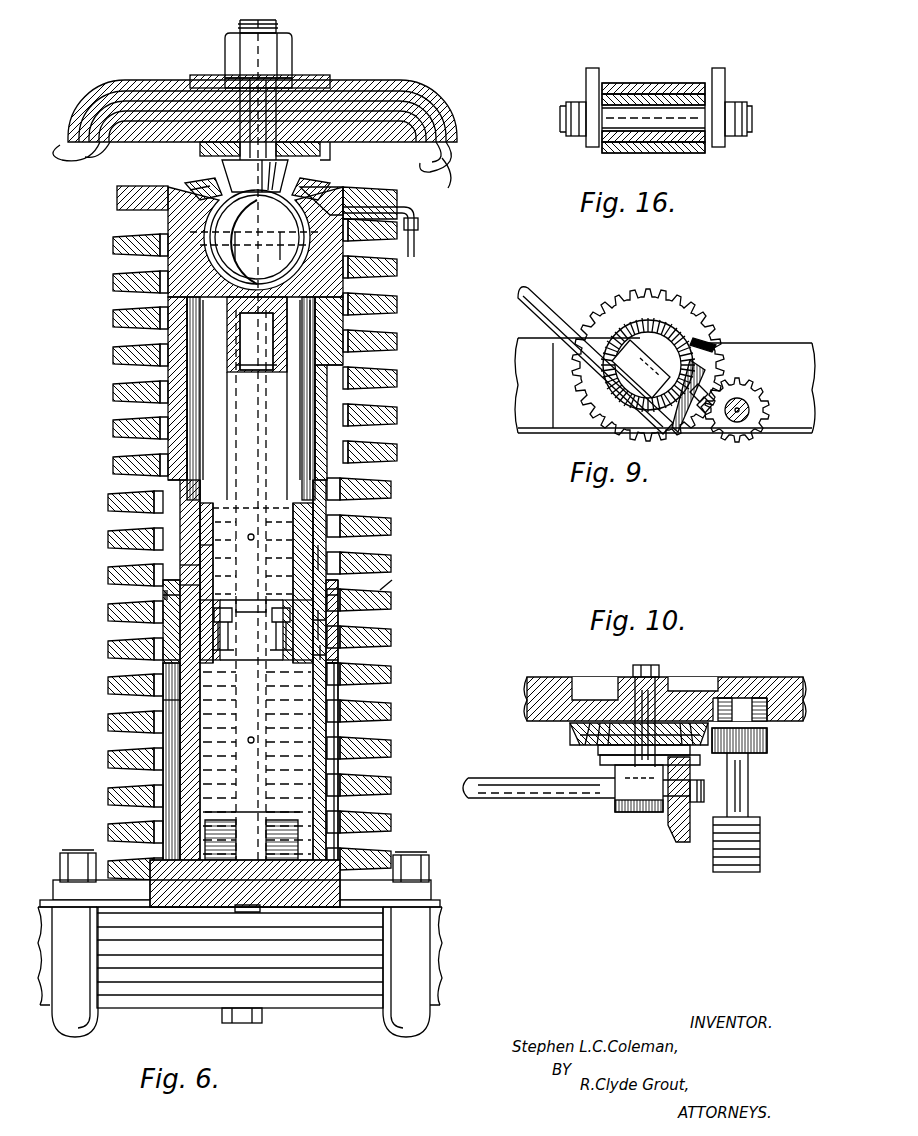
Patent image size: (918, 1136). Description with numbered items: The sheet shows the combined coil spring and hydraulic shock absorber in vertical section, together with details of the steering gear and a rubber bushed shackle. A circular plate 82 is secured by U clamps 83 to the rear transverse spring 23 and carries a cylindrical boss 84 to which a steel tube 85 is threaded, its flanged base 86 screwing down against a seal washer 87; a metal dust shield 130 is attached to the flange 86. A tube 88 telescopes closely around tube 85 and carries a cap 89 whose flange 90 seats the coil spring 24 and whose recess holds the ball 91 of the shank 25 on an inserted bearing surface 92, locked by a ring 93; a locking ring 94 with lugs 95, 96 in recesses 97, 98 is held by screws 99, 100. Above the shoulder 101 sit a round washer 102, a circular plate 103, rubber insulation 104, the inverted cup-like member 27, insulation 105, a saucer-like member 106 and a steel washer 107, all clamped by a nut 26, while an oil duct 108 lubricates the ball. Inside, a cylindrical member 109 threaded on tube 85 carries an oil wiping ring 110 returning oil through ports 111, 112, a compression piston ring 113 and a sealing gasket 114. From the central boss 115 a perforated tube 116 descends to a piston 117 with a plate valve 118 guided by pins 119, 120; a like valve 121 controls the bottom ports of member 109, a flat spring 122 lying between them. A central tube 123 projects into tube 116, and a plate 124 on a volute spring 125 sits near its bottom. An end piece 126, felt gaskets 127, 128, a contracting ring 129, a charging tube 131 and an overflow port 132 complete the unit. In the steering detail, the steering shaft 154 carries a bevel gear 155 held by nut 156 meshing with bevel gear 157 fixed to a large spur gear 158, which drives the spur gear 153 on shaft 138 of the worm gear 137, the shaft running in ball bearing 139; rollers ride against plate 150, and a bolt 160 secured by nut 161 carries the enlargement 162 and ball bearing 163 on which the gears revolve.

In FIG. 6, the rear transverse spring 23 is at (328, 988).
In FIG. 6, the coil spring 24 is at (392, 578).
In FIG. 6, the shank 25 is at (300, 82).
In FIG. 6, the nut 26 is at (294, 55).
In FIG. 6, the inverted cup-like member 27 is at (460, 180).
In FIG. 6, the circular plate 82 is at (442, 903).
In FIG. 6, the U clamps 83 is at (241, 972).
In FIG. 6, the cylindrical boss 84 is at (385, 860).
In FIG. 6, the steel tube 85 is at (350, 700).
In FIG. 6, the flanged base 86 is at (100, 852).
In FIG. 6, the seal washer 87 is at (135, 893).
In FIG. 6, the tube 88 is at (312, 412).
In FIG. 6, the top member or cap 89 is at (318, 305).
In FIG. 6, the flange 90 is at (117, 193).
In FIG. 6, the ball 91 is at (255, 237).
In FIG. 6, the inserted bearing surface 92 is at (392, 280).
In FIG. 6, the ring 93 is at (115, 248).
In FIG. 6, the locking ring 94 is at (282, 172).
In FIG. 6, the projecting lug 95 is at (322, 183).
In FIG. 6, the projecting lug 96 is at (215, 182).
In FIG. 6, the recess 97 is at (276, 237).
In FIG. 6, the recess 98 is at (231, 237).
In FIG. 6, the screw 99 is at (335, 195).
In FIG. 6, the screw 100 is at (198, 184).
In FIG. 6, the shoulder 101 is at (200, 152).
In FIG. 6, the round washer 102 is at (340, 160).
In FIG. 6, the circular plate 103 is at (400, 168).
In FIG. 6, the rubber insulation 104 is at (458, 133).
In FIG. 6, the insulation 105 is at (452, 160).
In FIG. 6, the steel saucer-like member 106 is at (395, 100).
In FIG. 6, the steel washer 107 is at (340, 88).
In FIG. 6, the oil duct 108 is at (268, 22).
In FIG. 6, the cylindrical member 109 is at (302, 505).
In FIG. 6, the oil wiping ring 110 is at (205, 512).
In FIG. 6, the port 111 is at (322, 552).
In FIG. 6, the port 112 is at (200, 548).
In FIG. 6, the compression piston ring 113 is at (185, 568).
In FIG. 6, the circular sealing gasket 114 is at (185, 588).
In FIG. 6, the central boss 115 is at (270, 362).
In FIG. 6, the tube 116 is at (256, 452).
In FIG. 6, the piston 117 is at (340, 662).
In FIG. 6, the circular plate valve 118 is at (345, 630).
In FIG. 6, the pin 119 is at (222, 655).
In FIG. 6, the pin 120 is at (287, 655).
In FIG. 6, the plate valve 121 is at (256, 630).
In FIG. 6, the flat circular spring 122 is at (205, 640).
In FIG. 6, the tube 123 is at (245, 705).
In FIG. 6, the plate 124 is at (233, 822).
In FIG. 6, the volute spring 125 is at (278, 822).
In FIG. 6, the re-inforcing circular end piece 126 is at (175, 625).
In FIG. 6, the circular felt gasket 127 is at (170, 598).
In FIG. 6, the felt gasket 128 is at (163, 675).
In FIG. 6, the contracting metal ring 129 is at (172, 665).
In FIG. 6, the metal dust shield 130 is at (163, 706).
In FIG. 6, the flexible tube 131 is at (418, 240).
In FIG. 6, the overflow hole 132 is at (340, 490).
In FIG. 10, the worm gear 137 is at (762, 830).
In FIG. 9, the shaft 138 is at (740, 420).
In FIG. 10, the shaft 138 is at (770, 790).
In FIG. 10, the ball bearing 139 is at (760, 700).
In FIG. 10, the plate 150 is at (715, 672).
In FIG. 9, the spur gear 153 is at (745, 395).
In FIG. 10, the spur gear 153 is at (767, 750).
In FIG. 9, the steering shaft 154 is at (555, 298).
In FIG. 10, the steering shaft 154 is at (520, 800).
In FIG. 9, the bevel gear 155 is at (715, 340).
In FIG. 10, the bevel gear 155 is at (672, 832).
In FIG. 9, the nut 156 is at (735, 345).
In FIG. 10, the nut 156 is at (698, 806).
In FIG. 9, the bevel gear 157 is at (672, 313).
In FIG. 10, the bevel gear 157 is at (610, 760).
In FIG. 9, the large spur gear 158 is at (655, 285).
In FIG. 10, the large spur gear 158 is at (570, 733).
In FIG. 10, the bolt 160 is at (630, 690).
In FIG. 10, the nut 161 is at (633, 667).
In FIG. 10, the enlargement 162 is at (625, 795).
In FIG. 10, the ball bearing 163 is at (598, 757).
In FIG. 16, the rubber roller rubber is at (645, 85).